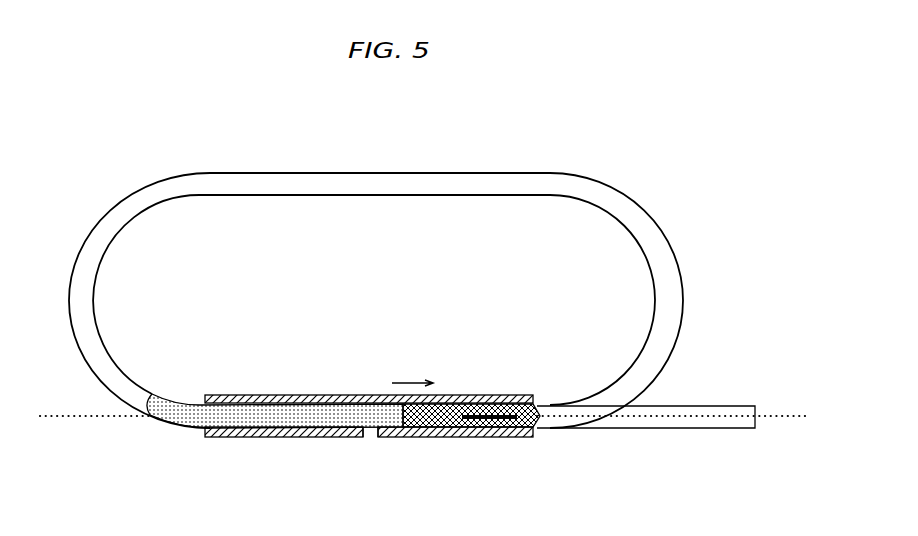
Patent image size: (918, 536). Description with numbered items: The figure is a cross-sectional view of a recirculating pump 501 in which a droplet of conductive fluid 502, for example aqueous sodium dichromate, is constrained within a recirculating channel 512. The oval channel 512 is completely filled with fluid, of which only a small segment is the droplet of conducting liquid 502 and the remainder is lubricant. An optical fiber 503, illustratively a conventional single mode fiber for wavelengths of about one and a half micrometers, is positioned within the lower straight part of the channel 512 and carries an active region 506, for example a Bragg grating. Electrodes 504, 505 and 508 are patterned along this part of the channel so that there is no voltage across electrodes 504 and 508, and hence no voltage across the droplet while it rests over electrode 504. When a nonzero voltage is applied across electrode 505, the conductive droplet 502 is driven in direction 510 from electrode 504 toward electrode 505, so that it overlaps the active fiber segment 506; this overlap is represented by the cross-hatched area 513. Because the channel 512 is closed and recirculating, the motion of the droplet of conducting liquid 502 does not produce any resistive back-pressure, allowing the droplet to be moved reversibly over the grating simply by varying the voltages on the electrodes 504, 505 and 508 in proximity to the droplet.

The recirculating pump 501 is at (660, 153).
The droplet of conductive fluid 502 is at (180, 393).
The optical fiber 503 is at (73, 418).
The electrode 504 is at (213, 438).
The electrode 505 is at (522, 438).
The active region 506 is at (502, 402).
The electrode 508 is at (273, 393).
The direction of droplet motion 510 is at (412, 378).
The recirculating channel 512 is at (573, 197).
The cross-hatched overlap area 513 is at (425, 438).